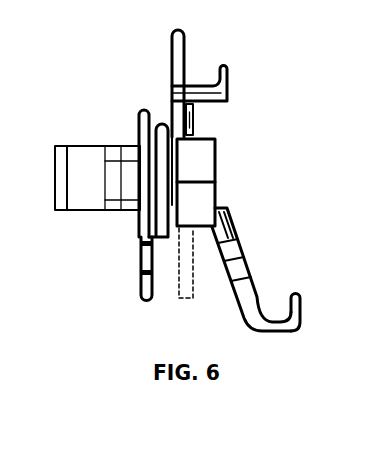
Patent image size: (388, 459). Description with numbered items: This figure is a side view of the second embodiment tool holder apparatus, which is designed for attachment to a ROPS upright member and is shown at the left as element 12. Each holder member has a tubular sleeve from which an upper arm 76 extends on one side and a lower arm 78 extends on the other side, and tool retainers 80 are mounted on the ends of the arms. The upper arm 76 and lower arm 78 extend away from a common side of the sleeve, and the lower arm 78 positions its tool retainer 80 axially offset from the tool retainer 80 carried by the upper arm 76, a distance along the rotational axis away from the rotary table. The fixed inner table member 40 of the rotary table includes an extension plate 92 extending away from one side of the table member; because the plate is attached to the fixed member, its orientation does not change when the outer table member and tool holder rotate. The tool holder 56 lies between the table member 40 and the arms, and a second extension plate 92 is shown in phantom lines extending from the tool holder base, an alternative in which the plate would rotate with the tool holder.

The connector body 12 is at (79, 137).
The fixed inner table member 40 is at (147, 108).
The arm 56 is at (273, 295).
The upper arm 76 is at (170, 117).
The lower arm 78 is at (240, 235).
The tool retainer 80 is at (229, 74).
The extension plate 92 is at (138, 263).